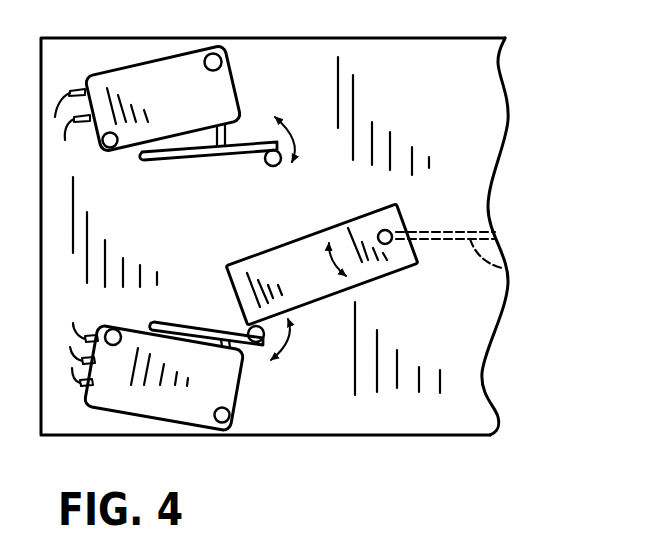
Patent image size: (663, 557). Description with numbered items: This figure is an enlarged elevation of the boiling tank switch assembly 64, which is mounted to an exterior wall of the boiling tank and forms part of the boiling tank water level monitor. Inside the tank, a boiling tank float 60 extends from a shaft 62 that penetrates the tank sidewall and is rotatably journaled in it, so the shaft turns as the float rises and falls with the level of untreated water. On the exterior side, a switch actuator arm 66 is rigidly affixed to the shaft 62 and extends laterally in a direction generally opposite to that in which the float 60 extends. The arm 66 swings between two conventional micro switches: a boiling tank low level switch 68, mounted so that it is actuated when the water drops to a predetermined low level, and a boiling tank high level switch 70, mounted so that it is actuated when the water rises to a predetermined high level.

The boiling tank float 60 is at (502, 270).
The shaft 62 is at (391, 229).
The boiling tank switch assembly 64 is at (560, 111).
The switch actuator arm 66 is at (414, 267).
The boiling tank low level switch 68 is at (225, 82).
The boiling tank high level switch 70 is at (232, 398).